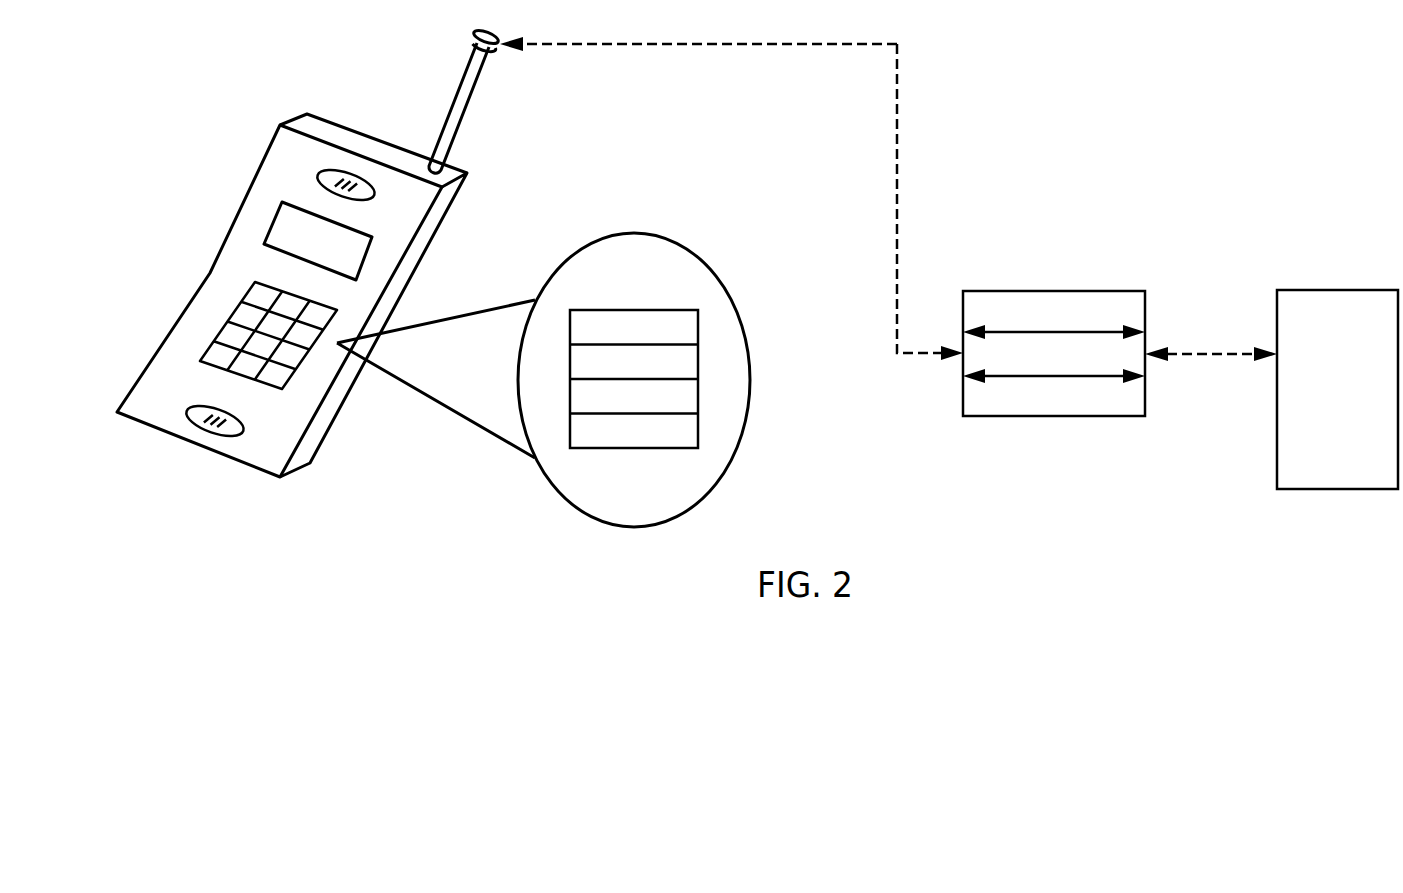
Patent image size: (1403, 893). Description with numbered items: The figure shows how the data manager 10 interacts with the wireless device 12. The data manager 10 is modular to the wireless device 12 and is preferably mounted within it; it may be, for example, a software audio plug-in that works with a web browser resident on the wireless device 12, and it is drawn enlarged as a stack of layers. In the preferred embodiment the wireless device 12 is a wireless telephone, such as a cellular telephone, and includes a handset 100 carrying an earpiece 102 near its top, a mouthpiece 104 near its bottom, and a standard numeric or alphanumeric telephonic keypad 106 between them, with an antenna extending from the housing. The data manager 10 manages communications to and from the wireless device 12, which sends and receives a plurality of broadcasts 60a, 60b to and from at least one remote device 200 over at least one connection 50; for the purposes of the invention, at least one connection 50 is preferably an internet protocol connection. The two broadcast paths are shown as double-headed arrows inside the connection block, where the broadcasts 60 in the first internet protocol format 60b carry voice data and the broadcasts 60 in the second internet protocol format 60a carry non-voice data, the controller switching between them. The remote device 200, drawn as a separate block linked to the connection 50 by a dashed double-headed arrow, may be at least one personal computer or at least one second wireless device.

The data manager 10 is at (633, 233).
The wireless device 12 is at (300, 114).
The internet protocol connection 50 is at (1027, 290).
The broadcast 60 is at (1020, 376).
The second internet protocol format 60a is at (1058, 330).
The first internet protocol format 60b is at (1058, 377).
The handset 100 is at (272, 168).
The earpiece 102 is at (373, 200).
The mouthpiece 104 is at (203, 433).
The telephonic keypad 106 is at (228, 373).
The remote device 200 is at (1330, 290).